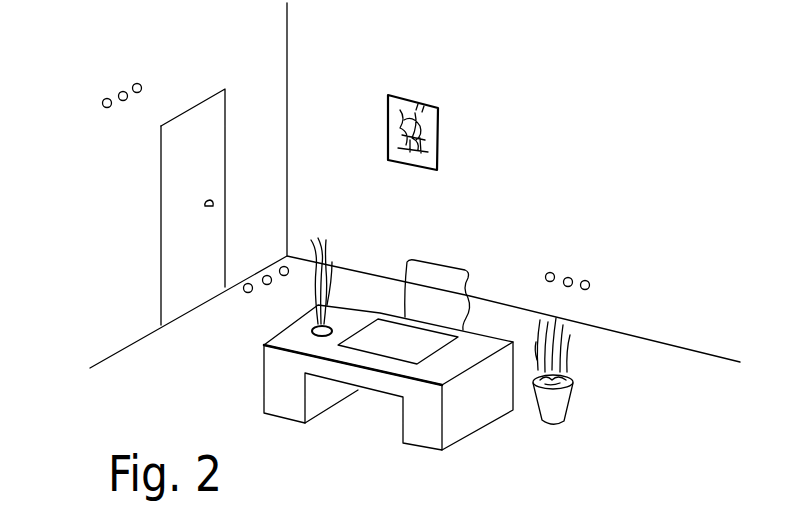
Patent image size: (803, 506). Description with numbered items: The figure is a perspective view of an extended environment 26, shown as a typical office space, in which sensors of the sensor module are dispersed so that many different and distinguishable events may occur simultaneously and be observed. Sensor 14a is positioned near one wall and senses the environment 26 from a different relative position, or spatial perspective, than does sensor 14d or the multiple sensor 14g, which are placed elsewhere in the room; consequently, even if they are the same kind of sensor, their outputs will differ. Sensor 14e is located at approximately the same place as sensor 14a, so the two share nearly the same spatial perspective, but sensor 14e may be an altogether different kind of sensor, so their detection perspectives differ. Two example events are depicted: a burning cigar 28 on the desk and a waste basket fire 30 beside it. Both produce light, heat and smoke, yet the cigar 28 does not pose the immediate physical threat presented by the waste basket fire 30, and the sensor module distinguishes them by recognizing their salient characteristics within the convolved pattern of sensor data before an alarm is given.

The sensor 14a is at (104, 105).
The sensor 14d is at (246, 293).
The sensor 14e is at (126, 86).
The multiple sensor 14g is at (540, 266).
The environment 26 is at (482, 223).
The burning cigar 28 is at (331, 320).
The waste basket fire 30 is at (555, 409).